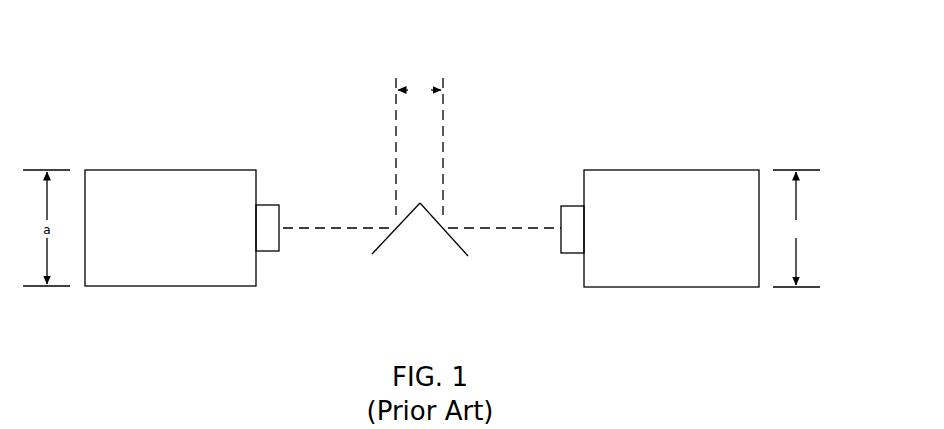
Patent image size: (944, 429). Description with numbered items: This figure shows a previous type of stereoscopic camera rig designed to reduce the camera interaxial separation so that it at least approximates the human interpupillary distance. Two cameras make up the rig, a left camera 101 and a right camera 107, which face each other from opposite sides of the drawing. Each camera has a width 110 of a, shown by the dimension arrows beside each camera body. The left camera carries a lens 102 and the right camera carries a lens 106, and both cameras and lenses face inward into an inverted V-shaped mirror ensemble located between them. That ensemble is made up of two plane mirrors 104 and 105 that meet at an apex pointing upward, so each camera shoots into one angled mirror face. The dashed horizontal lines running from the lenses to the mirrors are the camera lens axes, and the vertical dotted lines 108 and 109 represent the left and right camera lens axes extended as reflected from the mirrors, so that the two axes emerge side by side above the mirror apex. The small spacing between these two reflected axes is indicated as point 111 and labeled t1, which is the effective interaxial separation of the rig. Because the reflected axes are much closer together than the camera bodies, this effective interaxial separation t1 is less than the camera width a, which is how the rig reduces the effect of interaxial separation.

The left camera 101 is at (111, 265).
The left camera lens 102 is at (283, 257).
The plane mirror 104 is at (387, 239).
The plane mirror 105 is at (458, 258).
The right camera lens 106 is at (555, 250).
The right camera 107 is at (645, 185).
The dotted line 108 is at (392, 97).
The dotted line 109 is at (448, 102).
The camera width 110 is at (786, 303).
The effective interaxial separation 111 is at (416, 72).